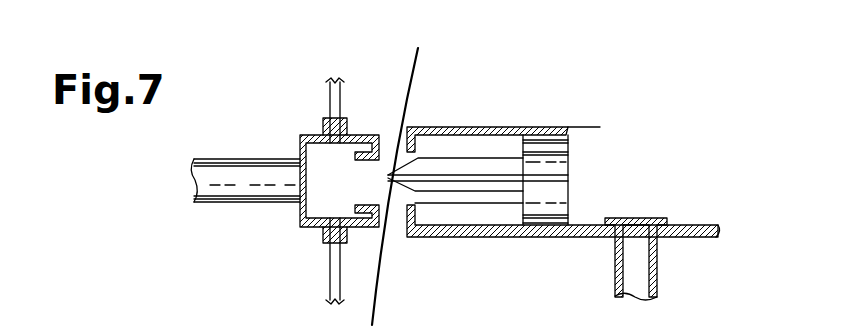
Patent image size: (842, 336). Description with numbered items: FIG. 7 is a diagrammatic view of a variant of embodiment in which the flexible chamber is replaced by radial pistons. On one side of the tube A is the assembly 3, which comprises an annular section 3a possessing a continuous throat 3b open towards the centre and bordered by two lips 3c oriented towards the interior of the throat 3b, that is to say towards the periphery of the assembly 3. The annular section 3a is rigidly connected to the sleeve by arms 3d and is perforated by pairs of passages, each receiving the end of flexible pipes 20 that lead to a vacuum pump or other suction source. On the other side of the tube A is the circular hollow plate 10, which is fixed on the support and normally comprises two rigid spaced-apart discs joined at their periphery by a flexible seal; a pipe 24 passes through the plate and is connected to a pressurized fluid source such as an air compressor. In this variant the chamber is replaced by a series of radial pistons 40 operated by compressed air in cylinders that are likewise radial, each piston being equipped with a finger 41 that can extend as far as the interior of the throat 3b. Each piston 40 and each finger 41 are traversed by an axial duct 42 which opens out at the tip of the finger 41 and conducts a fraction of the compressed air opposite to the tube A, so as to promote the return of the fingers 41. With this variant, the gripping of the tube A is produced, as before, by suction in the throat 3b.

The tube A is at (410, 80).
The assembly 3 is at (290, 216).
The annular section 3a is at (300, 136).
The throat 3b is at (318, 208).
The lips 3c is at (363, 163).
The arms 3d is at (212, 166).
The flexible pipes 20 is at (332, 100).
The circular hollow plate 10 is at (597, 127).
The radial pistons 40 is at (540, 156).
The finger 41 is at (418, 192).
The axial duct 42 is at (462, 182).
The pipe 24 is at (656, 270).